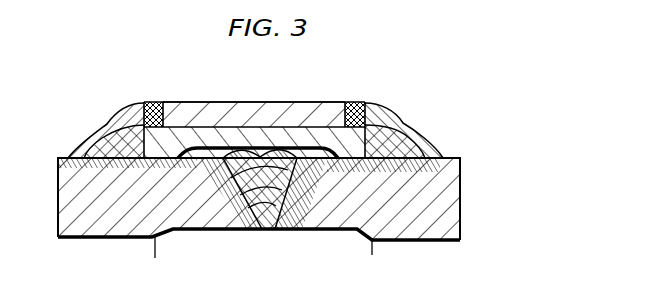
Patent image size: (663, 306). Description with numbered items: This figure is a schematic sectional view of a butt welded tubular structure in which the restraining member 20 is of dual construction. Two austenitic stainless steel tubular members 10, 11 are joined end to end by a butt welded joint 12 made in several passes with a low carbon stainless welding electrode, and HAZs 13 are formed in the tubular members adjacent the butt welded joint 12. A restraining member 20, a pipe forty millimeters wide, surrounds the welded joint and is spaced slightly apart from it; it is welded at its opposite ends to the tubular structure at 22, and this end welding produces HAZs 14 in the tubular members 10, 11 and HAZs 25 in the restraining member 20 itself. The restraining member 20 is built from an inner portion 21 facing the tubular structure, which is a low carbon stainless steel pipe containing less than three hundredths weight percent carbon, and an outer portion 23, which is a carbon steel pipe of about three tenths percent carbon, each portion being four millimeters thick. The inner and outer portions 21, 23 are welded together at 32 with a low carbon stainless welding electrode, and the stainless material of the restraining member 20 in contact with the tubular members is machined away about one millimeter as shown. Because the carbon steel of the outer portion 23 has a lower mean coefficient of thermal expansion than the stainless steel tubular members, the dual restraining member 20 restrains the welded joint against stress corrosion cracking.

The tubular member 10 is at (98, 226).
The tubular member 11 is at (410, 218).
The butt welded joint 12 is at (265, 230).
The HAZs adjacent the butt welded joint 13 is at (230, 230).
The HAZs formed in the tubular members 14 is at (72, 157).
The restraining member 20 is at (285, 98).
The inner portion 21 is at (213, 135).
The weld of the restraining member 22 is at (105, 131).
The outer portion 23 is at (243, 111).
The HAZs formed in the restraining member 25 is at (161, 116).
The weld between inner and outer portions 32 is at (162, 103).